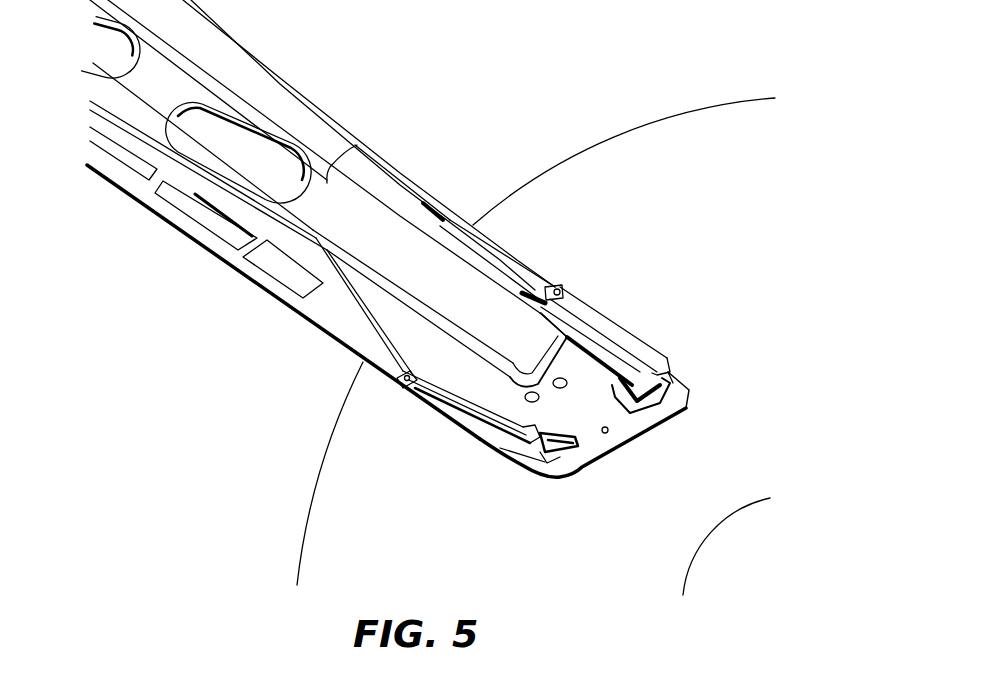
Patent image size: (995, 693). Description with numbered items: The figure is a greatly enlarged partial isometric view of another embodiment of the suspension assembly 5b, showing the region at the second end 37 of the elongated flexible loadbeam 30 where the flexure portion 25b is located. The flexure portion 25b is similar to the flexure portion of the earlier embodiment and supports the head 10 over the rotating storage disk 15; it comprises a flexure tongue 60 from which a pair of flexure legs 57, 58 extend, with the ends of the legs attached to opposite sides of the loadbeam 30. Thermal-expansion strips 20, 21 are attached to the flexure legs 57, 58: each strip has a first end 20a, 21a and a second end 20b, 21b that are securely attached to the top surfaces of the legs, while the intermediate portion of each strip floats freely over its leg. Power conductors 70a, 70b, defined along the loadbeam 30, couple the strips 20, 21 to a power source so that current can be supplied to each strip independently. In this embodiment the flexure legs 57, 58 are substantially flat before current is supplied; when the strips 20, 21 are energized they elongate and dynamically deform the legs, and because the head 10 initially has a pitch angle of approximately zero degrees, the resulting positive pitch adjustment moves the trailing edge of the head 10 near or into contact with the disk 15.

The suspension assembly 5b is at (136, 406).
The head 10 is at (547, 463).
The rotating storage disk 15 is at (689, 152).
The thermal-expansion strip 20 is at (450, 412).
The first end of thermal-expansion strip 20a is at (413, 385).
The second end of thermal-expansion strip 20b is at (503, 449).
The thermal-expansion strip 21 is at (620, 323).
The first end of thermal-expansion strip 21a is at (567, 288).
The second end of thermal-expansion strip 21b is at (667, 360).
The flexure portion 25b is at (661, 271).
The loadbeam 30 is at (357, 143).
The second end of loadbeam 37 is at (530, 330).
The flexure leg 57 is at (518, 462).
The flexure leg 58 is at (673, 383).
The flexure tongue 60 is at (604, 421).
The power conductor 70a is at (323, 233).
The power conductor 70b is at (423, 221).